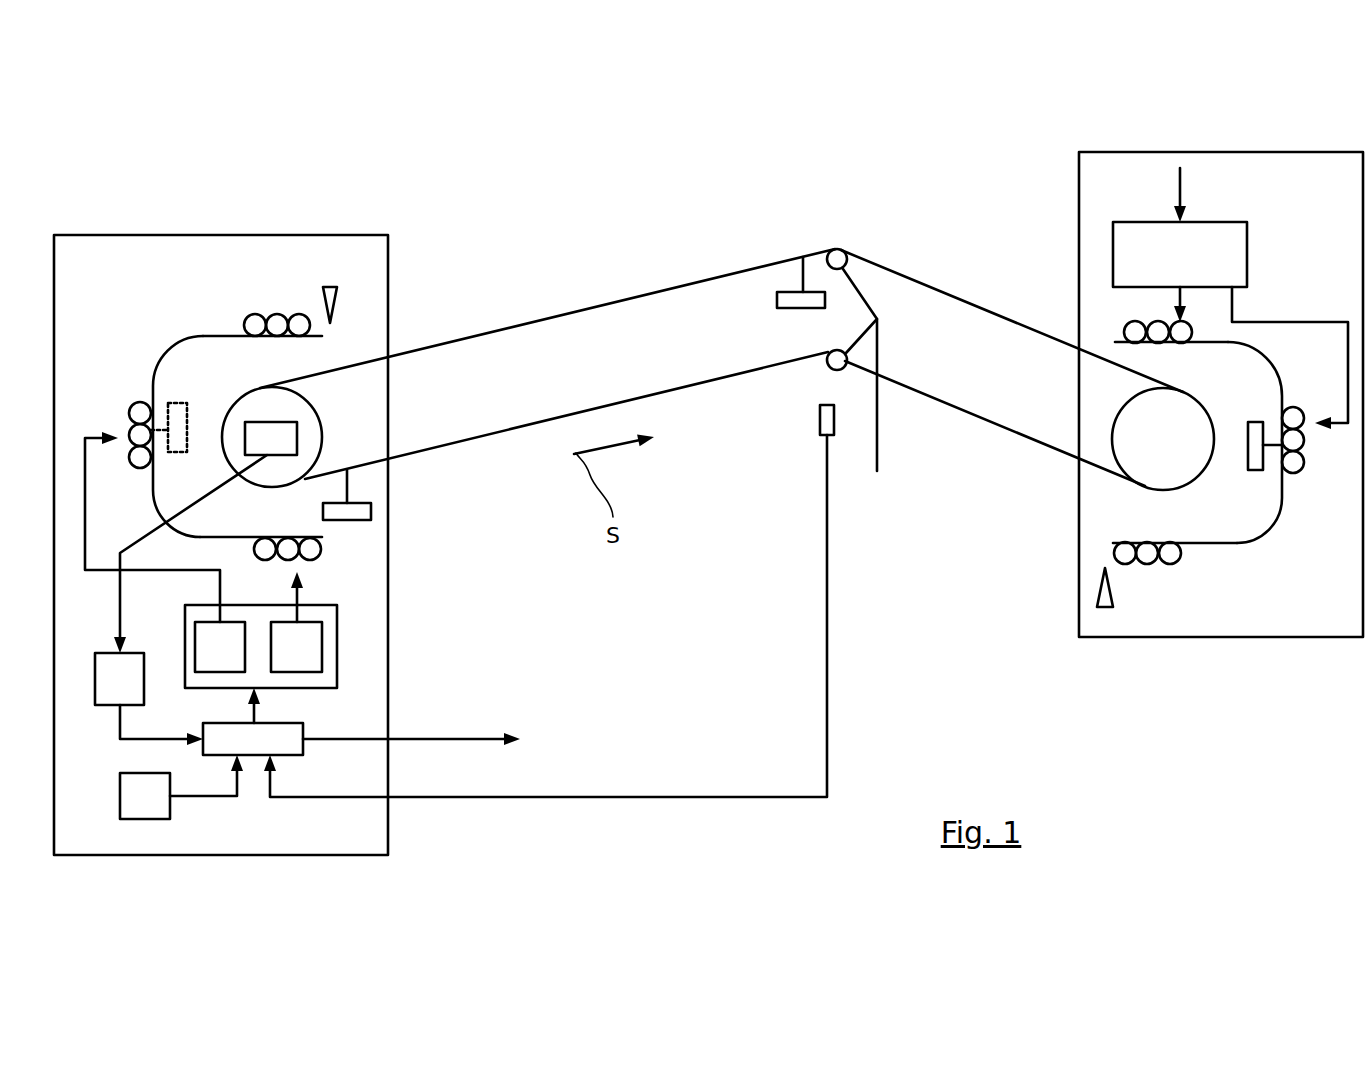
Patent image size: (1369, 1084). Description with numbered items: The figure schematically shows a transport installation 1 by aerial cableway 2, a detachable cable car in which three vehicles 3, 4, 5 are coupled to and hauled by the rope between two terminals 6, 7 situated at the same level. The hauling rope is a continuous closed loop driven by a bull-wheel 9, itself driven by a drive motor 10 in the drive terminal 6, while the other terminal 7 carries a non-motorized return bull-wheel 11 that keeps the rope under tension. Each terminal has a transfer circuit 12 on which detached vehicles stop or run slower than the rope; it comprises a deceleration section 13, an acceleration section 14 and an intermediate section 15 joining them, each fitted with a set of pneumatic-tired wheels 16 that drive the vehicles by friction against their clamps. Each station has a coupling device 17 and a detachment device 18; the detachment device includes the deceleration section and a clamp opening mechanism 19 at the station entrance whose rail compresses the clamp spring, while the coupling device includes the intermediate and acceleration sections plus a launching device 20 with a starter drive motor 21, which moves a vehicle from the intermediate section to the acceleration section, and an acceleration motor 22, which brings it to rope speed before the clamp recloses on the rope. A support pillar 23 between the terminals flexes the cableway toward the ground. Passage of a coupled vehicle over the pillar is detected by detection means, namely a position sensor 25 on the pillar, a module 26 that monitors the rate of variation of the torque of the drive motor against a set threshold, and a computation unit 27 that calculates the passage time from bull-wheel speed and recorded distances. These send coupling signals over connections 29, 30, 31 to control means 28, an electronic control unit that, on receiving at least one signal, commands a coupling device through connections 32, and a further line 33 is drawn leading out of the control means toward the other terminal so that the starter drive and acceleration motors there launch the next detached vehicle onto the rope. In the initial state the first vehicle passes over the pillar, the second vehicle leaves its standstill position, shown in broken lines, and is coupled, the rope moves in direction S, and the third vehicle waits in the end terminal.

The transport installation 1 is at (940, 193).
The aerial cableway 2 is at (990, 418).
The first vehicle 3 is at (775, 298).
The second vehicle 4 is at (187, 403).
The third vehicle 5 is at (1257, 422).
The drive terminal 6 is at (153, 235).
The terminal 7 is at (1242, 637).
The bull-wheel 9 is at (316, 438).
The drive motor 10 is at (271, 438).
The return bull-wheel 11 is at (1140, 427).
The transfer circuit 12 is at (173, 348).
The deceleration section 13 is at (290, 337).
The acceleration section 14 is at (303, 539).
The intermediate section 15 is at (130, 452).
The wheels 16 is at (254, 326).
The coupling device 17 is at (365, 633).
The detachment device 18 is at (291, 275).
The clamp opening mechanism 19 is at (337, 296).
The launching device 20 is at (340, 670).
The starter drive motor 21 is at (220, 647).
The acceleration motor 22 is at (296, 647).
The support pillar 23 is at (877, 397).
The position sensor 25 is at (816, 420).
The module 26 is at (119, 679).
The computation unit 27 is at (145, 796).
The control means 28 is at (290, 755).
The connection 29 is at (200, 796).
The connection 30 is at (150, 739).
The connection 31 is at (825, 537).
The connections 32 is at (263, 718).
The output signal line 33 is at (417, 739).